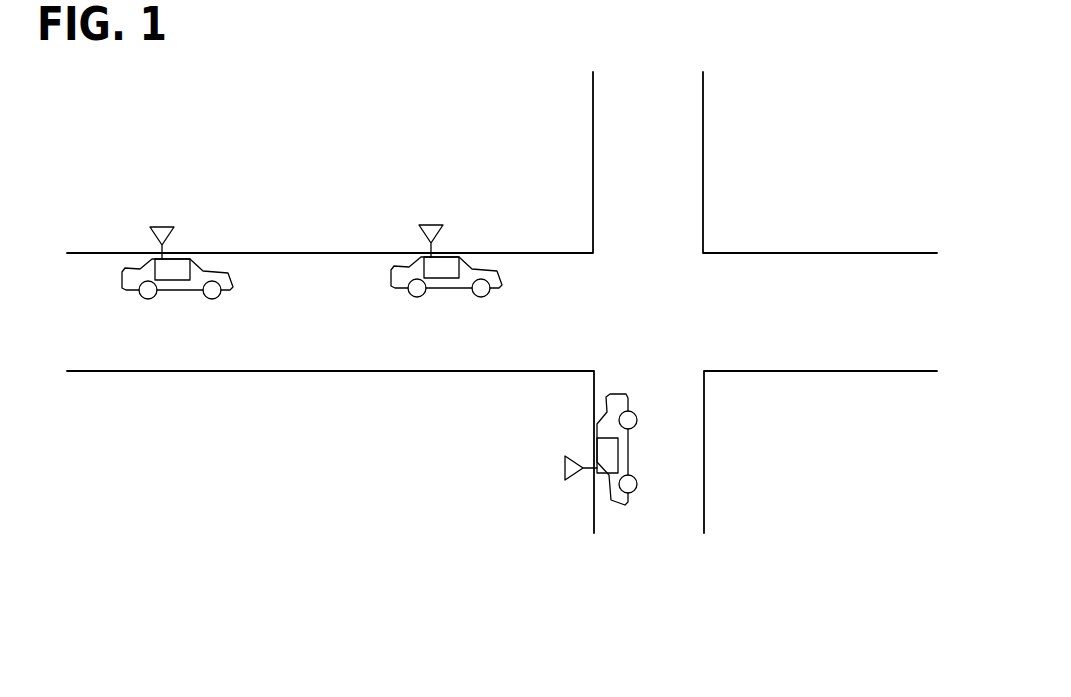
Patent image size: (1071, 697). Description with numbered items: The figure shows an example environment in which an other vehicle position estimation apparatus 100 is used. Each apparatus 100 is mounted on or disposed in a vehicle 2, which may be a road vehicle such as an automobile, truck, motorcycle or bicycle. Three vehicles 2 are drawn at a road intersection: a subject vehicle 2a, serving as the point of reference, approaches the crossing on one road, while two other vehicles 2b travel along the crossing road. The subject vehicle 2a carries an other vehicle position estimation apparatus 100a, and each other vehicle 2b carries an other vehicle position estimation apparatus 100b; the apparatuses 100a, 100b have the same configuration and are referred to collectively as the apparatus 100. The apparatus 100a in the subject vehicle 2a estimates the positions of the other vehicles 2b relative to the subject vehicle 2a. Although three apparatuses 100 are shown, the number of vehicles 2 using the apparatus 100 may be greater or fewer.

The vehicle 2 is at (360, 376).
The subject vehicle 2a is at (602, 497).
The other vehicle 2b is at (132, 272).
The other vehicle position estimation apparatus 100 is at (386, 341).
The other vehicle position estimation apparatus of subject vehicle 100a is at (595, 443).
The other vehicle position estimation apparatus of other vehicle 100b is at (178, 258).